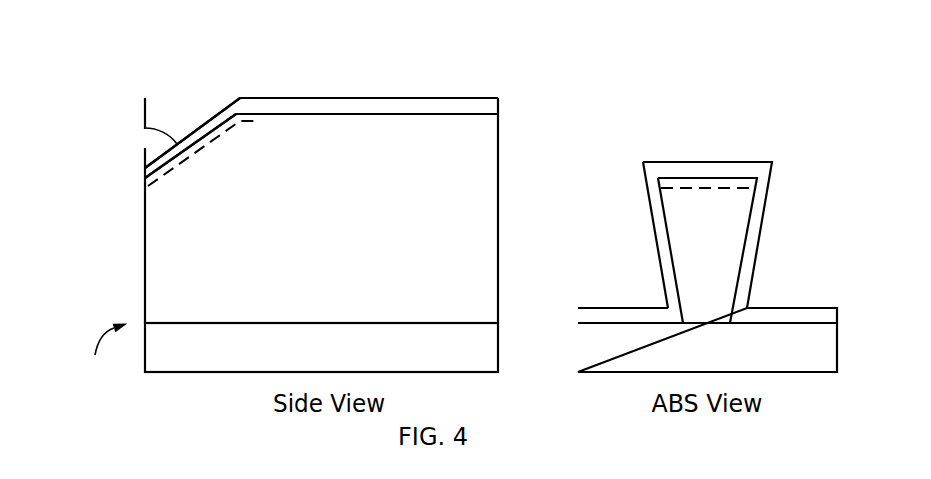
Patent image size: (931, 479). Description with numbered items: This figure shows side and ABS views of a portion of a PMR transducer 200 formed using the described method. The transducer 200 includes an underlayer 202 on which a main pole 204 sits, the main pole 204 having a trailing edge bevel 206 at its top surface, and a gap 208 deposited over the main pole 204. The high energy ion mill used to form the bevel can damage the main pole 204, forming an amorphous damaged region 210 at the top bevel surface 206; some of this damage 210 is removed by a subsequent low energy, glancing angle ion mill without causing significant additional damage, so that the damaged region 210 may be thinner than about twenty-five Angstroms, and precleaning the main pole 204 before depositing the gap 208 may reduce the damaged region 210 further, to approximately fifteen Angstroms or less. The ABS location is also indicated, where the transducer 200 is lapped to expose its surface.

The PMR transducer 200 is at (413, 78).
The underlayer 202 is at (498, 355).
The main pole 204 is at (673, 280).
The trailing edge bevel 206 is at (210, 91).
The gap 208 is at (145, 168).
The damaged region 210 is at (170, 191).